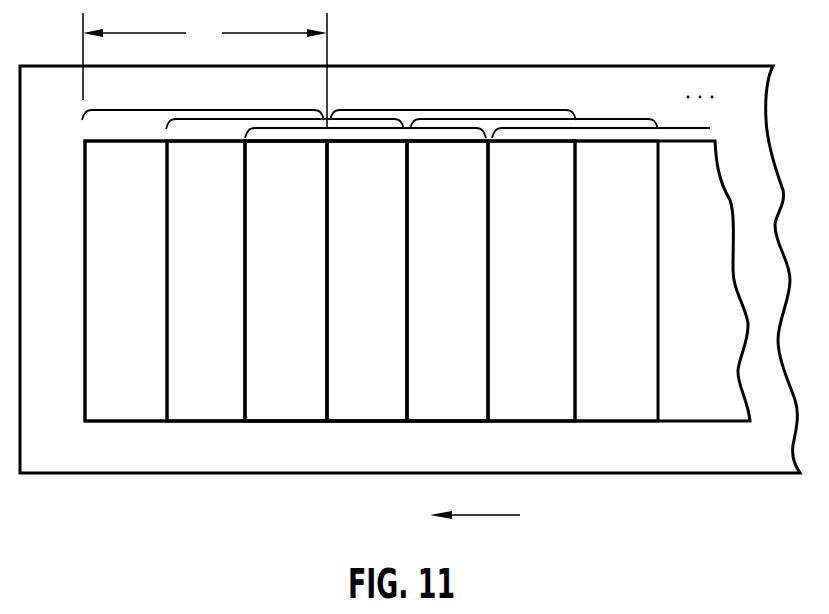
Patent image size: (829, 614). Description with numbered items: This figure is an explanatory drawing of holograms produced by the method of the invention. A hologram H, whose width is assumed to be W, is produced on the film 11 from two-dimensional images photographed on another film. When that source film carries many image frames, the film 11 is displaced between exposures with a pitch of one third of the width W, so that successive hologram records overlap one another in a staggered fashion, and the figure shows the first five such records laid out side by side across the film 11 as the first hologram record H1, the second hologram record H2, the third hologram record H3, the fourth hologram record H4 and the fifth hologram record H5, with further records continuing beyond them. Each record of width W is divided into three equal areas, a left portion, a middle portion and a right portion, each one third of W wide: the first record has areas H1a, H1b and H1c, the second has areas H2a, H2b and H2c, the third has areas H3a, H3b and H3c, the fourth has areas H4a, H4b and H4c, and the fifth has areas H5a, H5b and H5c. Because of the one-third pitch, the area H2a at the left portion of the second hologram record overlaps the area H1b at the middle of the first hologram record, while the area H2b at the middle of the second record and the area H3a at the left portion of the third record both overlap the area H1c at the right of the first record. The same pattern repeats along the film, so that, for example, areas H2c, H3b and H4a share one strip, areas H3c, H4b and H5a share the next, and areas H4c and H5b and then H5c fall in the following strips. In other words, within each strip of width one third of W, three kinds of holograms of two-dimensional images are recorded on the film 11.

The film 11 is at (241, 462).
The hologram H is at (630, 434).
The hologram width W is at (205, 69).
The first hologram record H1 is at (183, 110).
The second hologram record H2 is at (316, 118).
The third hologram record H3 is at (438, 127).
The fourth hologram record H4 is at (525, 111).
The fifth hologram record H5 is at (611, 119).
The left area of first hologram record H1a is at (126, 281).
The middle area of first hologram record H1b is at (206, 281).
The right area of first hologram record H1c is at (286, 281).
The left area of second hologram record H2a is at (206, 281).
The middle area of second hologram record H2b is at (286, 281).
The right area of second hologram record H2c is at (367, 281).
The left area of third hologram record H3a is at (286, 281).
The middle area of third hologram record H3b is at (367, 281).
The right area of third hologram record H3c is at (447, 281).
The left area of fourth hologram record H4a is at (367, 281).
The middle area of fourth hologram record H4b is at (447, 281).
The right area of fourth hologram record H4c is at (531, 281).
The left area of fifth hologram record H5a is at (447, 281).
The middle area of fifth hologram record H5b is at (531, 281).
The right area of fifth hologram record H5c is at (616, 281).